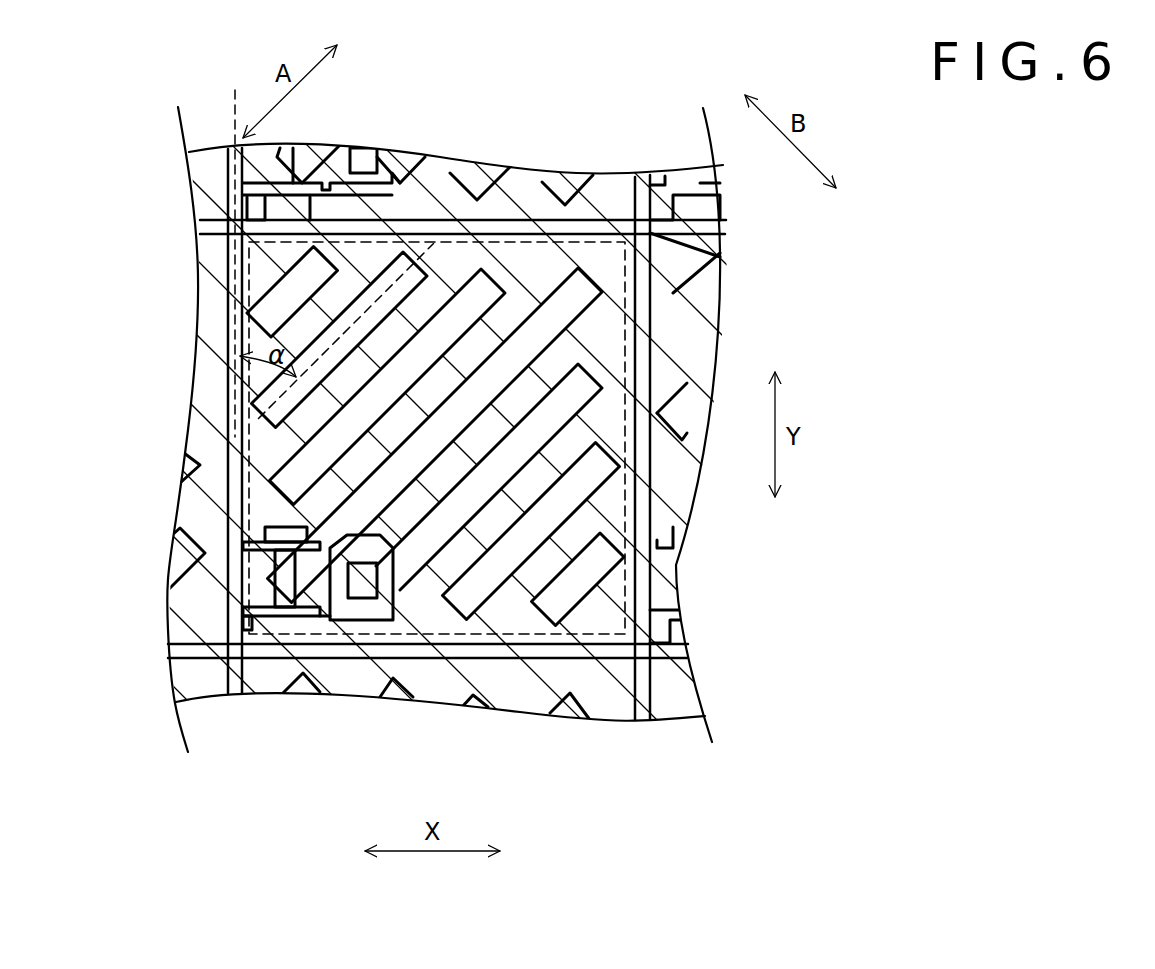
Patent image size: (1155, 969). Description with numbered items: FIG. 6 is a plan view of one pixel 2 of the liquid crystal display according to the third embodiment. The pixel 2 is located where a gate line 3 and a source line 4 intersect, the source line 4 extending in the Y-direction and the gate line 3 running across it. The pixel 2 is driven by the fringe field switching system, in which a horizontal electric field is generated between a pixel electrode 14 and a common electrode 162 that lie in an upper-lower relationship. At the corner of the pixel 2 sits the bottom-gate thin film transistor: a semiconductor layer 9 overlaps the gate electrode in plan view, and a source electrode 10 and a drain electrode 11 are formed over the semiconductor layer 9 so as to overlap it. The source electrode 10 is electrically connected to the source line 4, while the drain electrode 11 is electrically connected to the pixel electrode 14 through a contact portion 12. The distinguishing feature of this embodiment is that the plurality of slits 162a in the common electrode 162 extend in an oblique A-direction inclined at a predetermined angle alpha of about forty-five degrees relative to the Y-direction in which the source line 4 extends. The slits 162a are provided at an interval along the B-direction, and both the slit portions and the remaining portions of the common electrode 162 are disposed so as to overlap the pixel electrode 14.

The pixel 2 is at (498, 617).
The gate line 3 is at (428, 650).
The source line 4 is at (235, 673).
The semiconductor layer 9 is at (285, 603).
The source electrode 10 is at (258, 595).
The drain electrode 11 is at (323, 595).
The contact portion 12 is at (365, 585).
The pixel electrode 14 is at (605, 240).
The common electrode 162 is at (525, 197).
The slit 162a is at (473, 287).